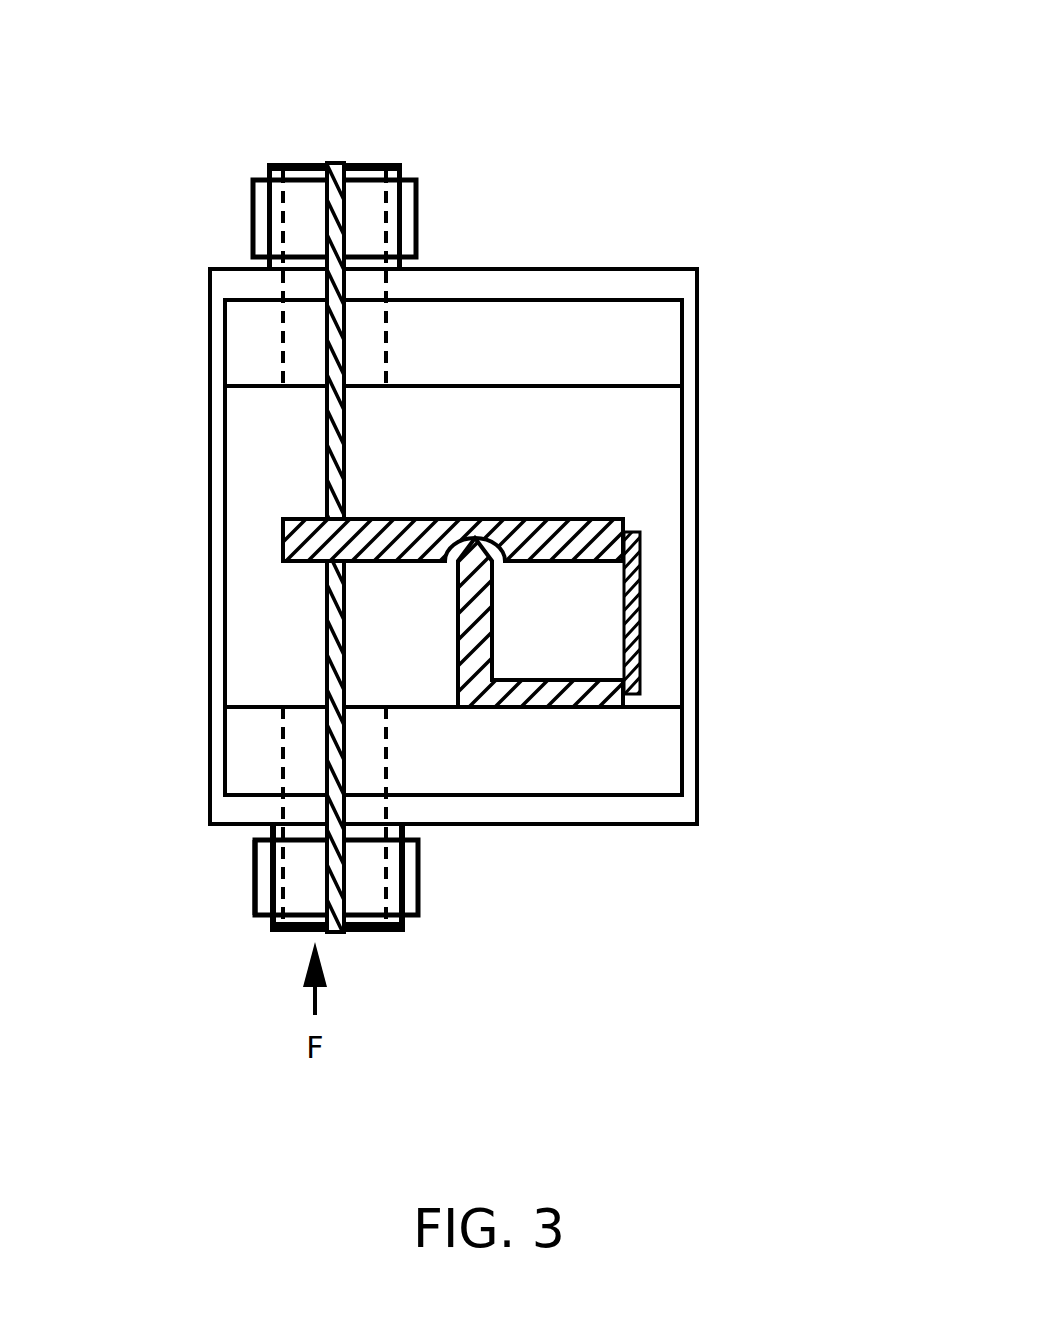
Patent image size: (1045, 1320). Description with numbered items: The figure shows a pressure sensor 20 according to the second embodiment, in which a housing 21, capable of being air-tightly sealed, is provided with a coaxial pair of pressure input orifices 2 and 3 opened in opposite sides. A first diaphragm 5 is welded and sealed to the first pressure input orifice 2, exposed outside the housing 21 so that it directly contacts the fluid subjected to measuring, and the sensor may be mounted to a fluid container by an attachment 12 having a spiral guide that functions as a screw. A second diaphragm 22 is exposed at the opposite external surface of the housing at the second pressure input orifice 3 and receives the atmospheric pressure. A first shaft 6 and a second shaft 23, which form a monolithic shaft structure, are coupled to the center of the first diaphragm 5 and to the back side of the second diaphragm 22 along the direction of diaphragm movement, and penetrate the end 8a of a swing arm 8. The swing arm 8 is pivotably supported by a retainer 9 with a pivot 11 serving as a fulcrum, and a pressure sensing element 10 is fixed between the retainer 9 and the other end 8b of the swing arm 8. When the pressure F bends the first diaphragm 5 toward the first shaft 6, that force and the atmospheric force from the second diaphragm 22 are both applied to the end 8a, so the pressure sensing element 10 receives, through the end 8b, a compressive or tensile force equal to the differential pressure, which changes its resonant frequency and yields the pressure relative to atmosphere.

The first pressure input orifice 2 is at (313, 898).
The second pressure input orifice 3 is at (297, 212).
The first diaphragm 5 is at (383, 932).
The first shaft 6 is at (209, 560).
The swing arm 8 is at (453, 563).
The end of swing arm 8a is at (283, 530).
The end of swing arm 8b is at (741, 586).
The retainer 9 is at (563, 703).
The pressure sensing element 10 is at (638, 573).
The pivot 11 is at (643, 652).
The attachment 12 is at (255, 857).
The pressure sensor 20 is at (727, 823).
The housing 21 is at (562, 825).
The second diaphragm 22 is at (355, 163).
The second shaft 23 is at (325, 440).